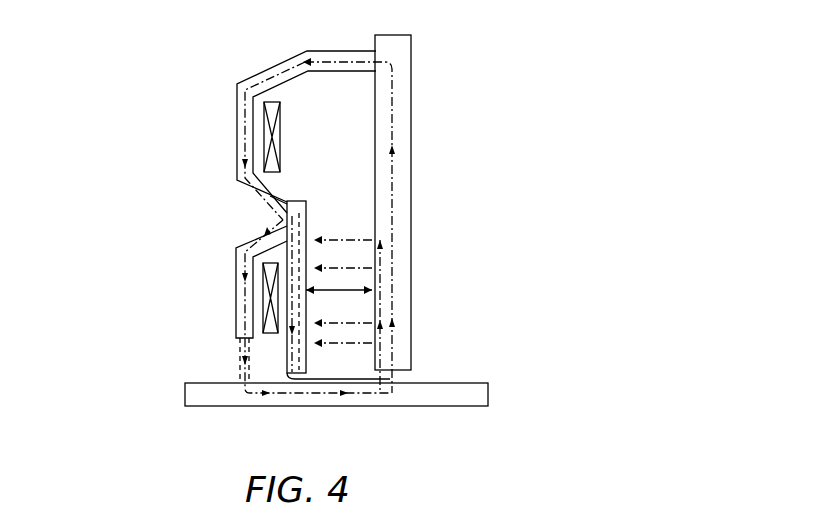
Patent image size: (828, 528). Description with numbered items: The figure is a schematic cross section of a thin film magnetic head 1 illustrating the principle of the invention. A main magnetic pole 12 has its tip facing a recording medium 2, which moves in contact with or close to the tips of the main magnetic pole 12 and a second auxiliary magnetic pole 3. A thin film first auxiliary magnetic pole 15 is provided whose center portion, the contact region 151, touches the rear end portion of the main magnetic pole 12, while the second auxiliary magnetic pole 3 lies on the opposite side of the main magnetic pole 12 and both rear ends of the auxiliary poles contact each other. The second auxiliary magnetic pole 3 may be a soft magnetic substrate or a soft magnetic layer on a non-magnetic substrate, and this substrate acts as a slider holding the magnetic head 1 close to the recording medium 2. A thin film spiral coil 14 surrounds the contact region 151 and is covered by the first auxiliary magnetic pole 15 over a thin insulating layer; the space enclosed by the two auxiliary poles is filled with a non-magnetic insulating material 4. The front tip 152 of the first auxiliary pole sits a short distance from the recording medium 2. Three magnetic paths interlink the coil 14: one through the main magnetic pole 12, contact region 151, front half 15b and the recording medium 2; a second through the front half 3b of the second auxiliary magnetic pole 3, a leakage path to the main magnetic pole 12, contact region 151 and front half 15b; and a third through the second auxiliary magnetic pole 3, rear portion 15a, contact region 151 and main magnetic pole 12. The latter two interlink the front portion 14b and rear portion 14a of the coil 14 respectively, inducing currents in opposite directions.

The magnetic head 1 is at (427, 97).
The recording medium 2 is at (481, 380).
The second auxiliary magnetic pole 3 is at (405, 198).
The front half of the second auxiliary magnetic pole 3b is at (423, 236).
The non-magnetic insulating material 4 is at (333, 258).
The main magnetic pole 12 is at (295, 238).
The spiral coil 14 is at (160, 50).
The rear portion of the coil 14a is at (267, 120).
The front portion of the coil 14b is at (270, 313).
The first auxiliary magnetic pole 15 is at (131, 132).
The rear portion of the first auxiliary magnetic pole 15a is at (237, 143).
The front half of the first auxiliary magnetic pole 15b is at (235, 282).
The contact region 151 is at (280, 213).
The front tip of the first auxiliary magnetic pole 152 is at (236, 337).